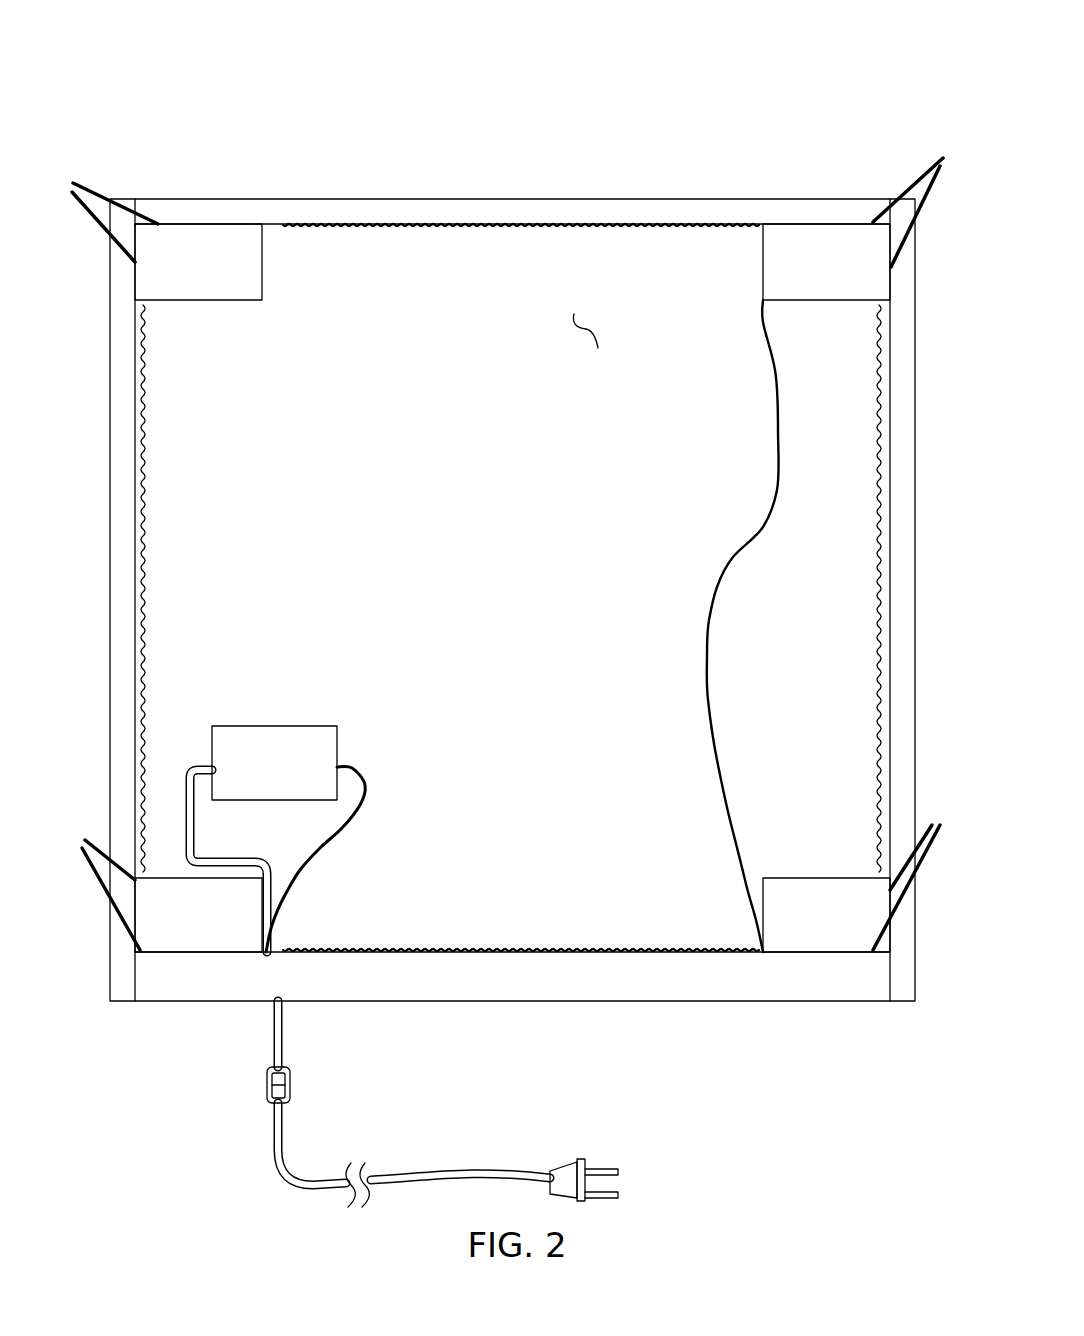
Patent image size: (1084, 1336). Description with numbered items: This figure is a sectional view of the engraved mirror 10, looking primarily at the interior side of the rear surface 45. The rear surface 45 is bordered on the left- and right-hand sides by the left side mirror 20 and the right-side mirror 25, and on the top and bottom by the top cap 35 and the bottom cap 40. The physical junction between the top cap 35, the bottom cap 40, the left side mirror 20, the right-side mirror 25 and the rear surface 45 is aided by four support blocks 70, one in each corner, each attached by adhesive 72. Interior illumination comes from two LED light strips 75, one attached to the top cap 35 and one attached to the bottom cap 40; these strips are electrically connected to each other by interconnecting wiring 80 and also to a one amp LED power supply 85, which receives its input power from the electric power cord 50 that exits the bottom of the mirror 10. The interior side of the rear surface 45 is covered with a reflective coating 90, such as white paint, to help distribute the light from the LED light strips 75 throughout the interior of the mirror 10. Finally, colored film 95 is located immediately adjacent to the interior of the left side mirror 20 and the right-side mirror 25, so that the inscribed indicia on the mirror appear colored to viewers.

The engraved mirror 10 is at (146, 177).
The left side mirror 20 is at (122, 545).
The right-side mirror 25 is at (905, 583).
The top cap 35 is at (455, 212).
The bottom cap 40 is at (557, 980).
The rear surface 45 is at (380, 298).
The electric power cord 50 is at (202, 868).
The support block 70 is at (188, 253).
The adhesive 72 is at (501, 541).
The LED light strip 75 is at (551, 224).
The interconnecting wiring 80 is at (708, 605).
The LED power supply 85 is at (265, 765).
The reflective coating 90 is at (590, 326).
The colored film 95 is at (140, 645).